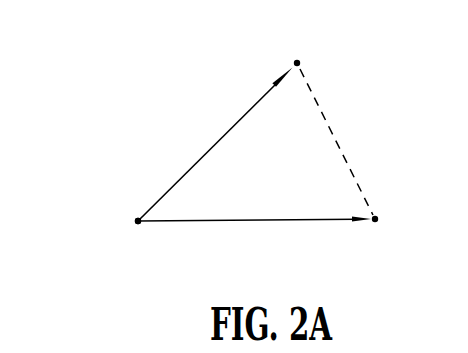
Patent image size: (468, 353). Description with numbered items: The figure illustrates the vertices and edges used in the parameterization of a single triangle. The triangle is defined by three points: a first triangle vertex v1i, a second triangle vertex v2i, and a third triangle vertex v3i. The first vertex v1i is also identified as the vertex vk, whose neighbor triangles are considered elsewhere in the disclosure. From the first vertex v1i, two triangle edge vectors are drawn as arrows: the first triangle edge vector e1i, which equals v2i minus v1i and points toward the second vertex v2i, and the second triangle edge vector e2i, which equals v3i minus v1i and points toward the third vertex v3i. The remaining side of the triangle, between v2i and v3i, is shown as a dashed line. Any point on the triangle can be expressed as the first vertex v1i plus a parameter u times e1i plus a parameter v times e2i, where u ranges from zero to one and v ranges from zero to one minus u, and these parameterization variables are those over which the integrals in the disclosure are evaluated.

The first triangle vertex v1i is at (85, 240).
The vertex vk is at (138, 221).
The second triangle vertex v2i is at (397, 220).
The third triangle vertex v3i is at (316, 47).
The first triangle edge vector e1i is at (254, 243).
The second triangle edge vector e2i is at (215, 145).